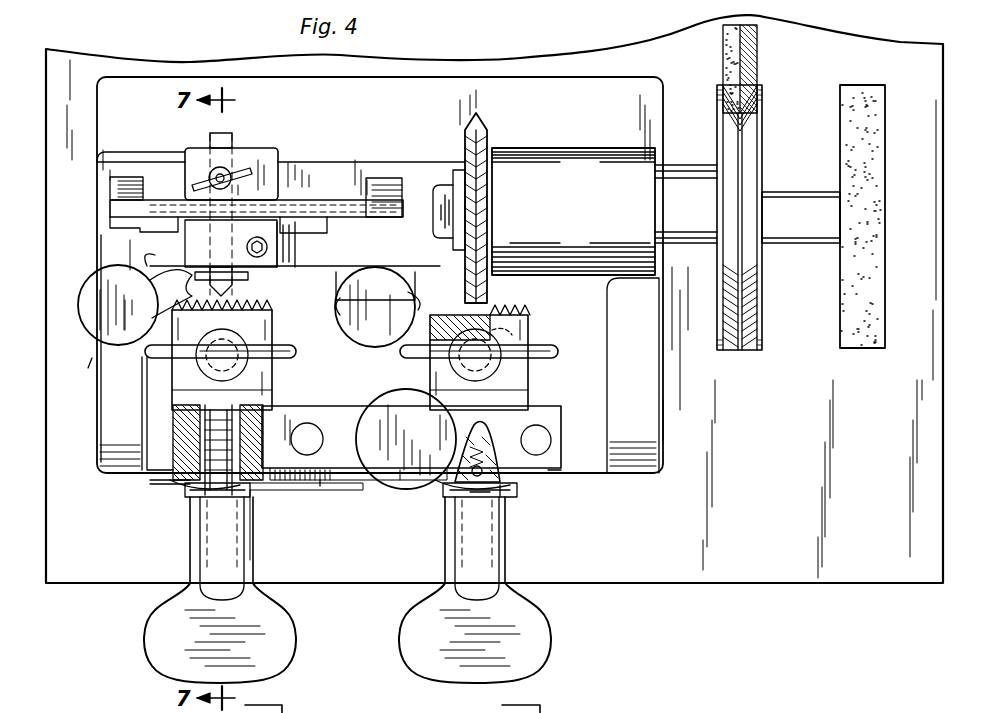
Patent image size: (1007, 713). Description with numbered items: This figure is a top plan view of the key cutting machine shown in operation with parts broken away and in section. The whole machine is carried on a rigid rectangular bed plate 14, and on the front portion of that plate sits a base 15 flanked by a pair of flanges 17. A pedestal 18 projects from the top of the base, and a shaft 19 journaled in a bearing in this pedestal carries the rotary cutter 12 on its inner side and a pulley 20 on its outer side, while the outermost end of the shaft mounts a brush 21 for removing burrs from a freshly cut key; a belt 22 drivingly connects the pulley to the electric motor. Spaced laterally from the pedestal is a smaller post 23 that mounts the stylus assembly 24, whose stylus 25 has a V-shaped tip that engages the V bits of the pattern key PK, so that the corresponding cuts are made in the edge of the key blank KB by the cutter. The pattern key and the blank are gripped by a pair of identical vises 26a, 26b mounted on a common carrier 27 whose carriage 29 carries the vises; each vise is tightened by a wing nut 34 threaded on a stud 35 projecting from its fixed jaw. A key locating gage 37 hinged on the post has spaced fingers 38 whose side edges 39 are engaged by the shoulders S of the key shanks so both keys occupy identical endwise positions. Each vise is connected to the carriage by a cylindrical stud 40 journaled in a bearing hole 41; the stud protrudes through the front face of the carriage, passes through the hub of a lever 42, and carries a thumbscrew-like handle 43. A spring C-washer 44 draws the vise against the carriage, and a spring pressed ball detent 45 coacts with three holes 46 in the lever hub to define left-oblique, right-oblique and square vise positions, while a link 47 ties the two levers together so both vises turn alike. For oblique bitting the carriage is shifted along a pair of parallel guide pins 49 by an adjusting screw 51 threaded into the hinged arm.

The rotary cutter 12 is at (478, 135).
The bed plate 14 is at (806, 559).
The base 15 is at (708, 412).
The flanges 17 is at (627, 345).
The pedestal 18 is at (588, 178).
The shaft 19 is at (812, 207).
The pulley 20 is at (760, 140).
The brush 21 is at (857, 305).
The belt 22 is at (758, 58).
The post 23 is at (280, 193).
The stylus assembly 24 is at (245, 147).
The stylus 25 is at (173, 293).
The vise 26a is at (262, 378).
The vise 26b is at (515, 380).
The common carrier 27 is at (548, 476).
The carriage 29 is at (333, 420).
The wing nut 34 is at (280, 343).
The stud 35 is at (517, 337).
The key locating gage 37 is at (337, 197).
The fingers 38 is at (143, 185).
The side edge 39 is at (112, 203).
The cylindrical stud 40 is at (222, 430).
The bearing hole 41 is at (215, 440).
The lever 42 is at (197, 483).
The handle 43 is at (270, 622).
The spring C-washer 44 is at (200, 493).
The spring pressed ball detent 45 is at (503, 488).
The holes 46 is at (473, 493).
The link 47 is at (330, 485).
The guide pins 49 is at (538, 440).
The adjusting screw 51 is at (415, 403).
The shoulders S is at (192, 260).
The key blank KB is at (340, 305).
The pattern key PK is at (74, 373).